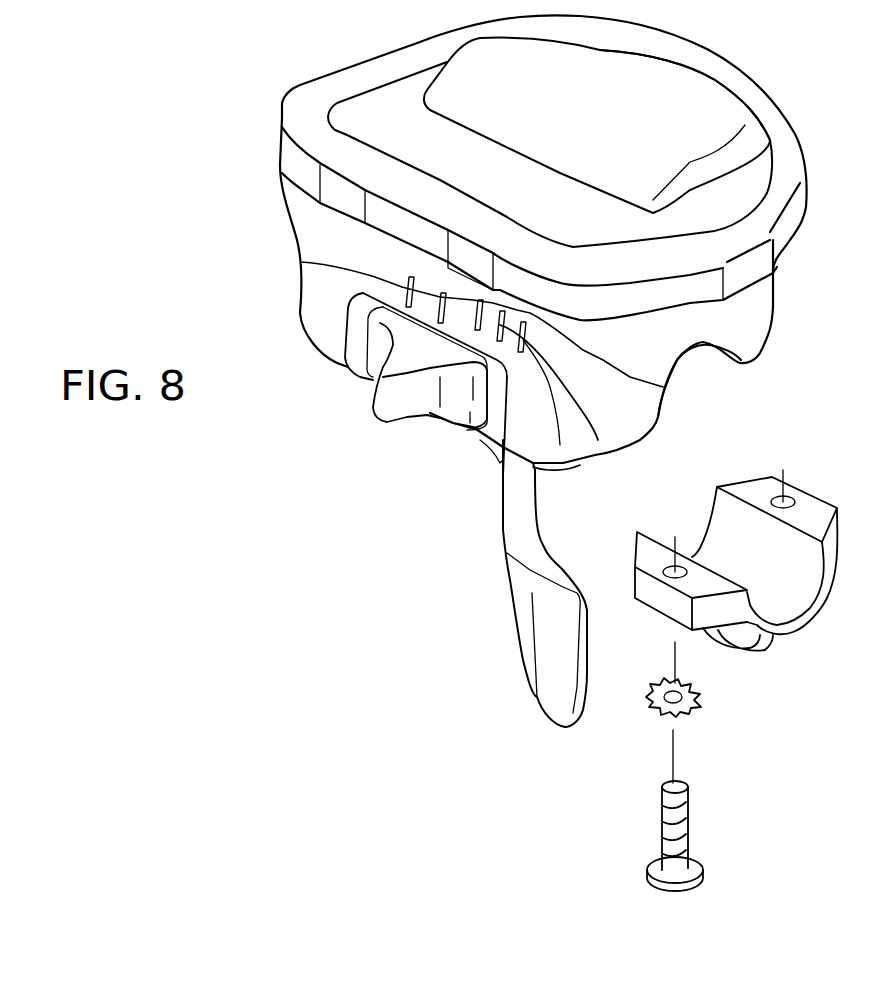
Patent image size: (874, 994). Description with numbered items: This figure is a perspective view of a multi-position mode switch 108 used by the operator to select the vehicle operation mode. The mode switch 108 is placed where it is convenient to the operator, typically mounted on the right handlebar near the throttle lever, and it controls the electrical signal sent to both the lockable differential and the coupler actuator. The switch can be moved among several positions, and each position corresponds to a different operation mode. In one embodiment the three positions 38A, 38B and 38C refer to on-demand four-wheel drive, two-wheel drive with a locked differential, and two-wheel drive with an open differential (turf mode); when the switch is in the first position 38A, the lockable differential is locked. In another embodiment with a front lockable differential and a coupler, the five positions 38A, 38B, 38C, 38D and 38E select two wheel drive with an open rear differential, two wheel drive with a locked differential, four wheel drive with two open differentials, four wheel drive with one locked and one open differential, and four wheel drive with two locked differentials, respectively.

The first switch position 38A is at (300, 262).
The second switch position 38B is at (453, 303).
The third switch position 38C is at (663, 387).
The fourth switch position 38D is at (500, 327).
The fifth switch position 38E is at (598, 440).
The multi-position mode switch 108 is at (390, 407).